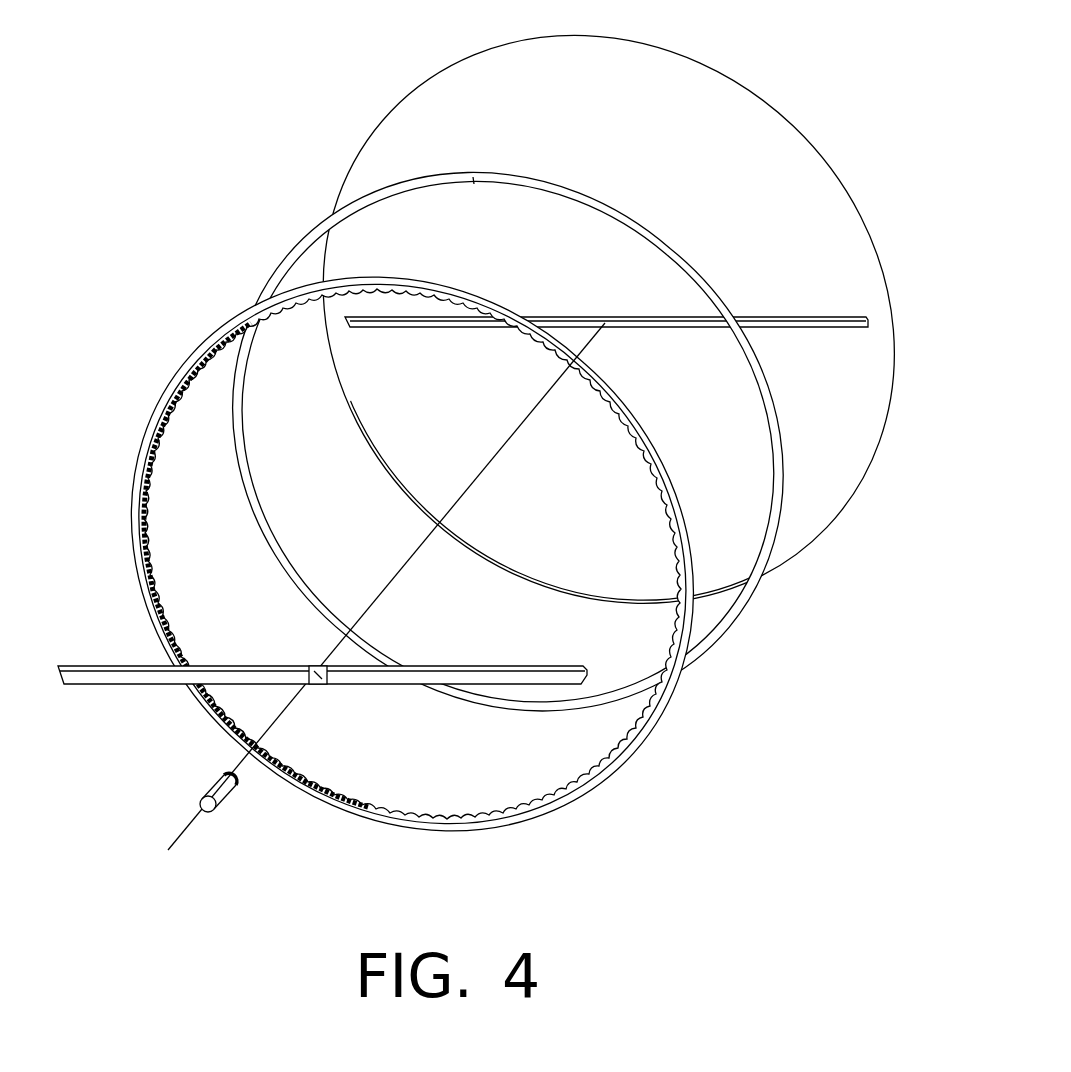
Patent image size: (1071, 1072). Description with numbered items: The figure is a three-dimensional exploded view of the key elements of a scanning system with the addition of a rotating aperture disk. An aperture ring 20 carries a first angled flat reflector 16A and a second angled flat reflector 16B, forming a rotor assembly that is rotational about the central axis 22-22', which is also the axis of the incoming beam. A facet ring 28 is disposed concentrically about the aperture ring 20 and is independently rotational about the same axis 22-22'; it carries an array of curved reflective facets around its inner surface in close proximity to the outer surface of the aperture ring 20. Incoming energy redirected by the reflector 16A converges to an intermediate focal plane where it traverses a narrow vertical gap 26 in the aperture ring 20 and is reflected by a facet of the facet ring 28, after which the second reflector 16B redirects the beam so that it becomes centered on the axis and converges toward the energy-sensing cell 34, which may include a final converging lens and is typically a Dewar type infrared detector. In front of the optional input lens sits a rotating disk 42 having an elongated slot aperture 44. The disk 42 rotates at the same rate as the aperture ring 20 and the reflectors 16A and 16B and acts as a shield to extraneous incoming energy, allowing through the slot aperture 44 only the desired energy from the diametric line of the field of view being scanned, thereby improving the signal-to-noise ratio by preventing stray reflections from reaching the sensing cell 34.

The first angled flat reflector 16A is at (138, 665).
The second angled flat reflector 16B is at (320, 684).
The aperture ring 20 is at (290, 262).
The axis 22 is at (608, 360).
The axis 22' is at (370, 603).
The narrow vertical gap 26 is at (473, 182).
The facet ring 28 is at (182, 385).
The energy-sensing cell 34 is at (214, 791).
The rotating disk 42 is at (608, 360).
The elongated slot aperture 44 is at (813, 328).